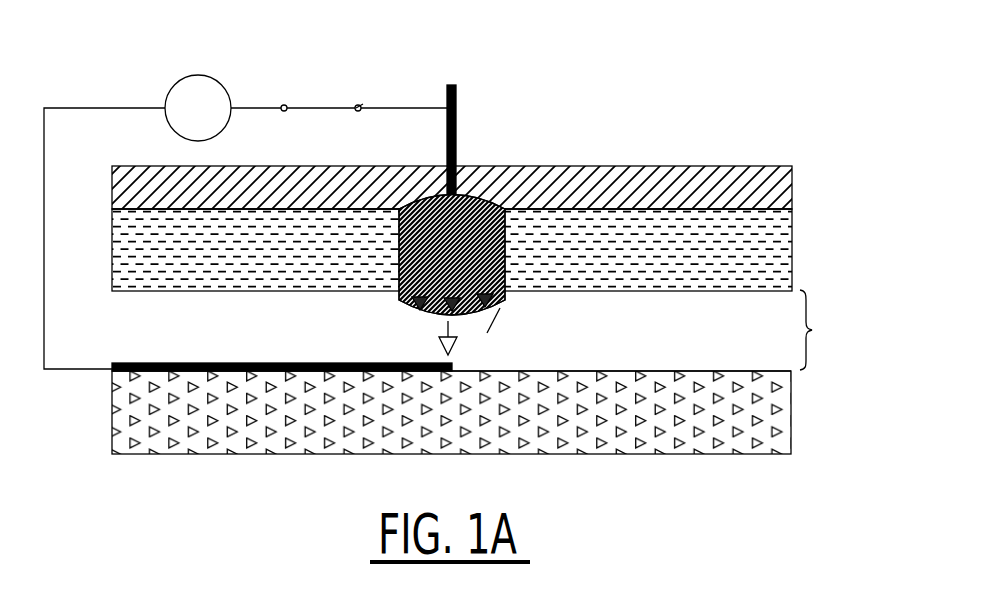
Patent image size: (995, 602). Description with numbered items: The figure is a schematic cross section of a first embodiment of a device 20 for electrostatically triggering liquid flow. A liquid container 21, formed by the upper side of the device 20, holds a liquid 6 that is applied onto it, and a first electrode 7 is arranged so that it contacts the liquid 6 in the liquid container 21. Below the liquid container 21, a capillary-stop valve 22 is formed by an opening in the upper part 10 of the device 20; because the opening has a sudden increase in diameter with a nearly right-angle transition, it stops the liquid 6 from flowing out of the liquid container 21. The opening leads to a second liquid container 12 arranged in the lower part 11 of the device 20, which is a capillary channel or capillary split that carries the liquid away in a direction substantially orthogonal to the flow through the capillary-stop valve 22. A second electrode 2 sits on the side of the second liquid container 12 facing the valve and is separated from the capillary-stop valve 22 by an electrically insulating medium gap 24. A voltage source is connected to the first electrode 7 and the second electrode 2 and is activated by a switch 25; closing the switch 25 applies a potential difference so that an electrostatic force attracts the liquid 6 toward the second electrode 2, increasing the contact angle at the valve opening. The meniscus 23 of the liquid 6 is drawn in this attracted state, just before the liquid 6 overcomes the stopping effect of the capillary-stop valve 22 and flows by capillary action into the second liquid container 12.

The device 20 is at (456, 265).
The switch 25 is at (318, 106).
The first electrode 7 is at (456, 130).
The liquid 6 is at (625, 178).
The liquid container 21 is at (770, 192).
The upper part 10 is at (772, 265).
The capillary-stop valve 22 is at (505, 270).
The meniscus 23 is at (400, 300).
The electrically insulating medium gap 24 is at (827, 330).
The second electrode 2 is at (158, 362).
The lower part 11 is at (765, 412).
The second liquid container 12 is at (750, 348).